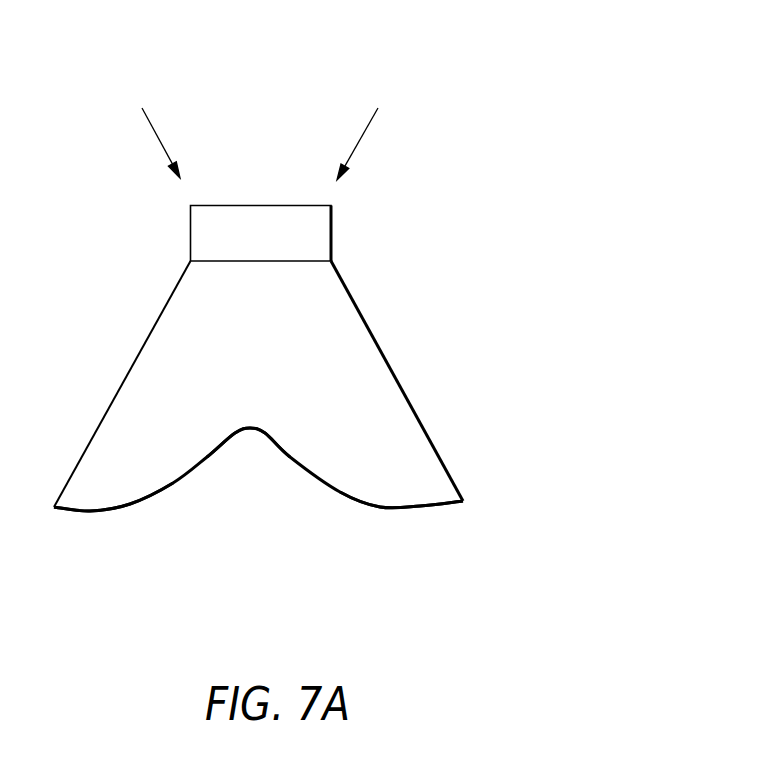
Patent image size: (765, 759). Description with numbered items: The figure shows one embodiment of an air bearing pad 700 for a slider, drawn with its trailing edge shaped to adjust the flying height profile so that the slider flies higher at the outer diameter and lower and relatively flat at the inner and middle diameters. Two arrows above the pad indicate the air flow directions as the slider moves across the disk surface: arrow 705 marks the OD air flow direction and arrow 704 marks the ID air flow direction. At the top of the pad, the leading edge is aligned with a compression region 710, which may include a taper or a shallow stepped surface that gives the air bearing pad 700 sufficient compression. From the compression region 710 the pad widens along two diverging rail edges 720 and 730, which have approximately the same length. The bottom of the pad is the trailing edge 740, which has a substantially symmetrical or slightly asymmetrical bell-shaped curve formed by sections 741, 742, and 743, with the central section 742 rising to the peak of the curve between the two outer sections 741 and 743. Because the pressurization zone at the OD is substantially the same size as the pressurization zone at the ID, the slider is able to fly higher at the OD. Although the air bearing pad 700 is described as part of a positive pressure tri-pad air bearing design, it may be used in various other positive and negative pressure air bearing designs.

The air bearing pad 700 is at (561, 154).
The ID air flow direction arrow 704 is at (387, 93).
The OD air flow direction arrow 705 is at (131, 91).
The compression region 710 is at (331, 232).
The rail edge 720 is at (400, 373).
The rail edge 730 is at (93, 437).
The trailing edge 740 is at (274, 546).
The trailing edge section 741 is at (112, 513).
The trailing edge section 742 is at (252, 428).
The trailing edge section 743 is at (415, 508).